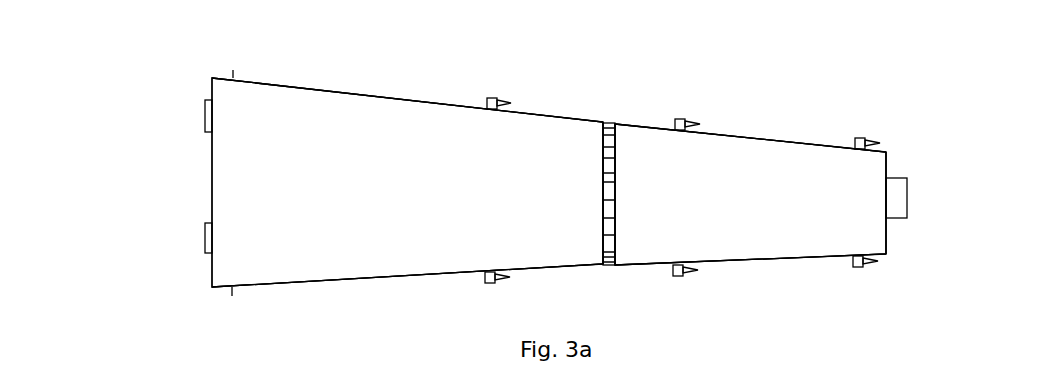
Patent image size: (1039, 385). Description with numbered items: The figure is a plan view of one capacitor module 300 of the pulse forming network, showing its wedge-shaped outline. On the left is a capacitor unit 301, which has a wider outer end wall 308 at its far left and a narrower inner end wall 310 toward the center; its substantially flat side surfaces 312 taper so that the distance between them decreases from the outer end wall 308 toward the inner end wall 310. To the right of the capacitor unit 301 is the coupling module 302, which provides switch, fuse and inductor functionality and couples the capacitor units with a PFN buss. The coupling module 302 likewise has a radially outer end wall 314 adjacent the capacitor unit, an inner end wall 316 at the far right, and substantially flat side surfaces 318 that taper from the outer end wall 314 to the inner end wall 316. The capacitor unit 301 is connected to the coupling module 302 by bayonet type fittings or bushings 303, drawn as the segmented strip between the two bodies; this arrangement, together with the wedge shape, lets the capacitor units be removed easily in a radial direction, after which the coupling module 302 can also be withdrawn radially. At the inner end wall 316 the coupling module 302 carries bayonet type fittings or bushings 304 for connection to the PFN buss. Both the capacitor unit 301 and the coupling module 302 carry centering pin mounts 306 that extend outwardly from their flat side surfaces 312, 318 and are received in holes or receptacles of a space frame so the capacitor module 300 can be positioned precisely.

The capacitor module 300 is at (640, 106).
The capacitor unit 301 is at (348, 232).
The coupling module 302 is at (738, 190).
The bayonet type fittings or bushings 303 is at (602, 163).
The bayonet type fittings or bushings 304 is at (907, 190).
The centering pin mounts 306 is at (511, 101).
The outer end wall 308 is at (210, 166).
The inner end wall 310 is at (603, 110).
The side surfaces 312 is at (330, 91).
The radially outer end wall 314 is at (613, 280).
The inner end wall 316 is at (886, 228).
The side surfaces 318 is at (790, 140).